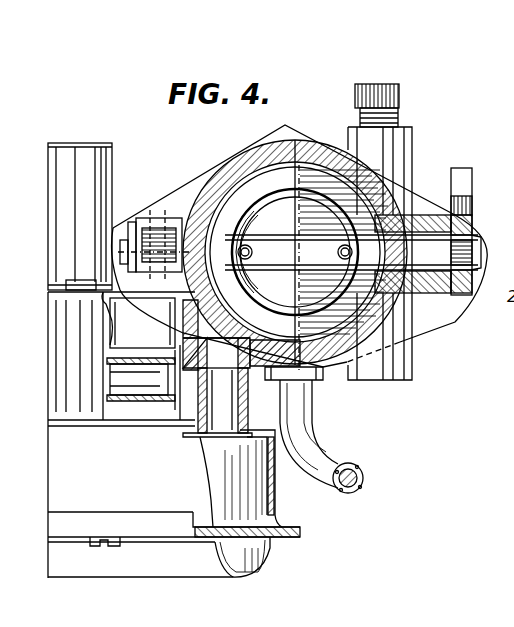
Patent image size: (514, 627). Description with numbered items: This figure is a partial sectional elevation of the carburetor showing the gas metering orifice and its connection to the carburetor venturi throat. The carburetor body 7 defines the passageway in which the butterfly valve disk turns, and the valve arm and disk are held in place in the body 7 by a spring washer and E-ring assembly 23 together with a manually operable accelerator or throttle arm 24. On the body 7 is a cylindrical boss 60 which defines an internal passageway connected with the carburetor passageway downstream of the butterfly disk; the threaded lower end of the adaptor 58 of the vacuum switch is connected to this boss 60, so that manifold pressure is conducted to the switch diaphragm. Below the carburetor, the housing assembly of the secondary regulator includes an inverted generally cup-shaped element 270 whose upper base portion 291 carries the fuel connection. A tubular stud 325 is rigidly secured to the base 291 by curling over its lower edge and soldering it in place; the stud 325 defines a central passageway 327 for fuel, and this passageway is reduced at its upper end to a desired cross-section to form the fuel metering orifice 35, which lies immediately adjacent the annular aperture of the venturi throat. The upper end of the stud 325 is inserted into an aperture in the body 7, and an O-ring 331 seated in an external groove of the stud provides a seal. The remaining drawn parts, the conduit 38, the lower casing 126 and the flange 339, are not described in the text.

The carburetor body 7 is at (205, 185).
The spring washer and E-ring assembly 23 is at (130, 228).
The throttle arm 24 is at (473, 208).
The fuel metering orifice 35 is at (232, 332).
The conduit 38 is at (116, 388).
The adaptor 58 is at (400, 94).
The cylindrical boss 60 is at (412, 137).
The lower casing 126 is at (201, 446).
The inverted cup-shaped element 270 is at (275, 493).
The upper base portion 291 is at (184, 432).
The tubular stud 325 is at (250, 408).
The central passageway 327 is at (224, 398).
The O-ring 331 is at (184, 335).
The flange 339 is at (264, 380).